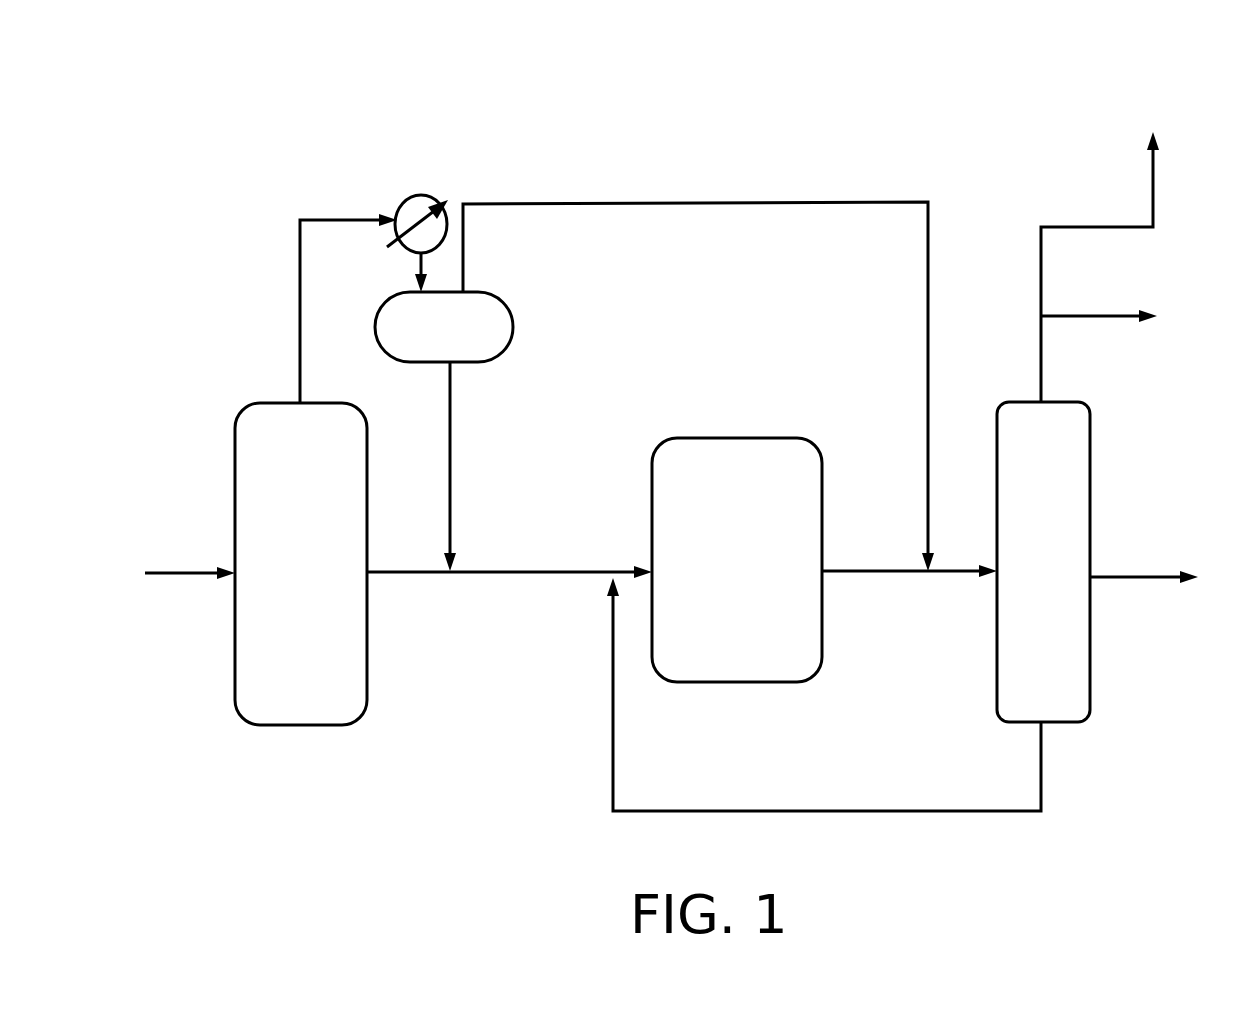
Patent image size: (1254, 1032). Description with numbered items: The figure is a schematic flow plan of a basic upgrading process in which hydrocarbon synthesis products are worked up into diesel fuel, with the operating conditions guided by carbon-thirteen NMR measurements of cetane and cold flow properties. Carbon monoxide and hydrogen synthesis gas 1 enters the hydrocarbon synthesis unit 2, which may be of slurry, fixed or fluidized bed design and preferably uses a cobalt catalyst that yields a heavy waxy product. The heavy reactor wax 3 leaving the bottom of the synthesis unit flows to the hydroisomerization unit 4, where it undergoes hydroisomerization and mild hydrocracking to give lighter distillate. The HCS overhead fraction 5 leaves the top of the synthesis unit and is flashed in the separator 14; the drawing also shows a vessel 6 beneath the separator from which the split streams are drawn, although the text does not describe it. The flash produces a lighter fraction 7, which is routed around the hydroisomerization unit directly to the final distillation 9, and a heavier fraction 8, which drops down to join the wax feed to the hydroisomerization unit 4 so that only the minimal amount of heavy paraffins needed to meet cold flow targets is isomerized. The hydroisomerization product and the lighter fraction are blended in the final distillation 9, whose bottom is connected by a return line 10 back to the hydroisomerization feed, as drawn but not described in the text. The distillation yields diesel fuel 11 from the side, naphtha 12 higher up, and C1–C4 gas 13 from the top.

The synthesis gas 1 is at (190, 554).
The hydrocarbon synthesis unit 2 is at (301, 564).
The reactor wax 3 is at (509, 548).
The hydroisomerization unit 4 is at (737, 560).
The HCS overhead fraction 5 is at (331, 308).
The separator drum 6 is at (444, 327).
The lighter fraction 7 is at (698, 365).
The heavier fraction 8 is at (460, 466).
The final distillation 9 is at (1043, 562).
The recycle stream 10 is at (824, 694).
The diesel fuel 11 is at (1170, 571).
The naphtha 12 is at (1127, 316).
The C1–C4 gas 13 is at (1104, 237).
The separator 14 is at (417, 225).